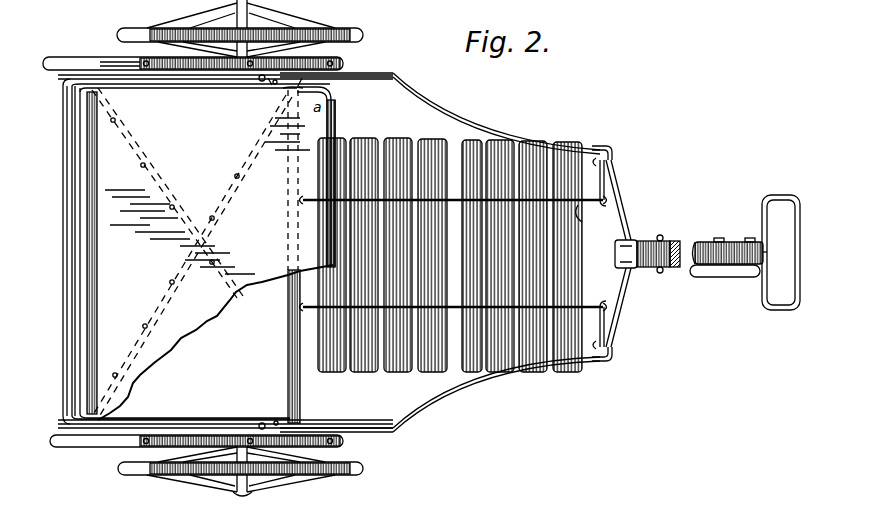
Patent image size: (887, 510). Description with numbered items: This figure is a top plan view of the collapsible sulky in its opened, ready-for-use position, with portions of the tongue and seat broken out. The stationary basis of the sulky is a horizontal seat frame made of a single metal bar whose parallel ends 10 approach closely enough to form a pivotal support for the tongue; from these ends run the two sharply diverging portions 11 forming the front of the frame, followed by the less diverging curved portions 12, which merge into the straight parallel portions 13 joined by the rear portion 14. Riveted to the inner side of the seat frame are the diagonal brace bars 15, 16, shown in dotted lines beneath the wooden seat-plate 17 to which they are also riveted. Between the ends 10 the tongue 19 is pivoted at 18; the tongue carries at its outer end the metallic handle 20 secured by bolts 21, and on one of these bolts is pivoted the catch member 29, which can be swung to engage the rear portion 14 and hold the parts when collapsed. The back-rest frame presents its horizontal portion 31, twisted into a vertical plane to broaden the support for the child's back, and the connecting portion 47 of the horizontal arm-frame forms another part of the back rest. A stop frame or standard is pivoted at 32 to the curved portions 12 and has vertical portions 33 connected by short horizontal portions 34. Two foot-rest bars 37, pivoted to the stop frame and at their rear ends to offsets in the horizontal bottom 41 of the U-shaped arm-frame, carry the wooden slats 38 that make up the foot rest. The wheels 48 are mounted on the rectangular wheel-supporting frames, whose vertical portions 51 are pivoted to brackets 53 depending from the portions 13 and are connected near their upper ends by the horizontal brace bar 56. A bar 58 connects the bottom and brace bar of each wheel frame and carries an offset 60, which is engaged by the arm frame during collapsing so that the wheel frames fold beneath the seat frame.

The parallel ends 10 is at (648, 250).
The sharply diverging portions 11 is at (620, 222).
The curved portions 12 is at (490, 118).
The straight parallel portions 13 is at (372, 77).
The rear portion 14 is at (82, 266).
The diagonal brace bar 15 is at (158, 168).
The diagonal brace bar 16 is at (165, 295).
The wooden seat-plate 17 is at (207, 196).
The pivot 18 is at (660, 271).
The tongue 19 is at (698, 242).
The metallic handle 20 is at (780, 310).
The bolts 21 is at (750, 238).
The catch member 29 is at (728, 278).
The horizontal portion 31 is at (73, 228).
The pivot 32 is at (588, 378).
The vertical portions 33 is at (606, 162).
The short horizontal portions 34 is at (604, 190).
The foot-rest bars 37 is at (302, 312).
The slats 38 is at (445, 370).
The horizontal bottom 41 is at (288, 356).
The connecting portion 47 is at (76, 186).
The wheels 48 is at (182, 33).
The vertical portions 51 is at (146, 60).
The brackets 53 is at (345, 77).
The horizontal brace bar 56 is at (315, 57).
The bar 58 is at (290, 80).
The offsets 60 is at (262, 82).